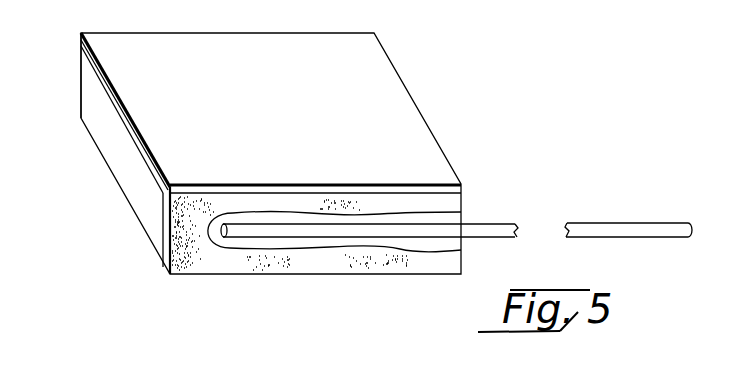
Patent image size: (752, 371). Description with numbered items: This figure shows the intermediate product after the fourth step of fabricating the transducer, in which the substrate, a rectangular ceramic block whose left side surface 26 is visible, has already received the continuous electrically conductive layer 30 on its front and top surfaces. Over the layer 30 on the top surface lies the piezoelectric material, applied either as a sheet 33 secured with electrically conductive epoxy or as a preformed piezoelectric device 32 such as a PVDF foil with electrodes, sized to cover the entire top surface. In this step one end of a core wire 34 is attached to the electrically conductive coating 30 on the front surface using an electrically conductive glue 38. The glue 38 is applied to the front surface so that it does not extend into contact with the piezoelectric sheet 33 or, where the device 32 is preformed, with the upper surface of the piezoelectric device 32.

The left side surface 26 is at (118, 166).
The electrically conductive layer 30 is at (87, 57).
The piezoelectric device 32 is at (80, 40).
The sheet of piezoelectric material 33 is at (453, 190).
The core wire 34 is at (583, 222).
The electrically conductive glue 38 is at (450, 242).